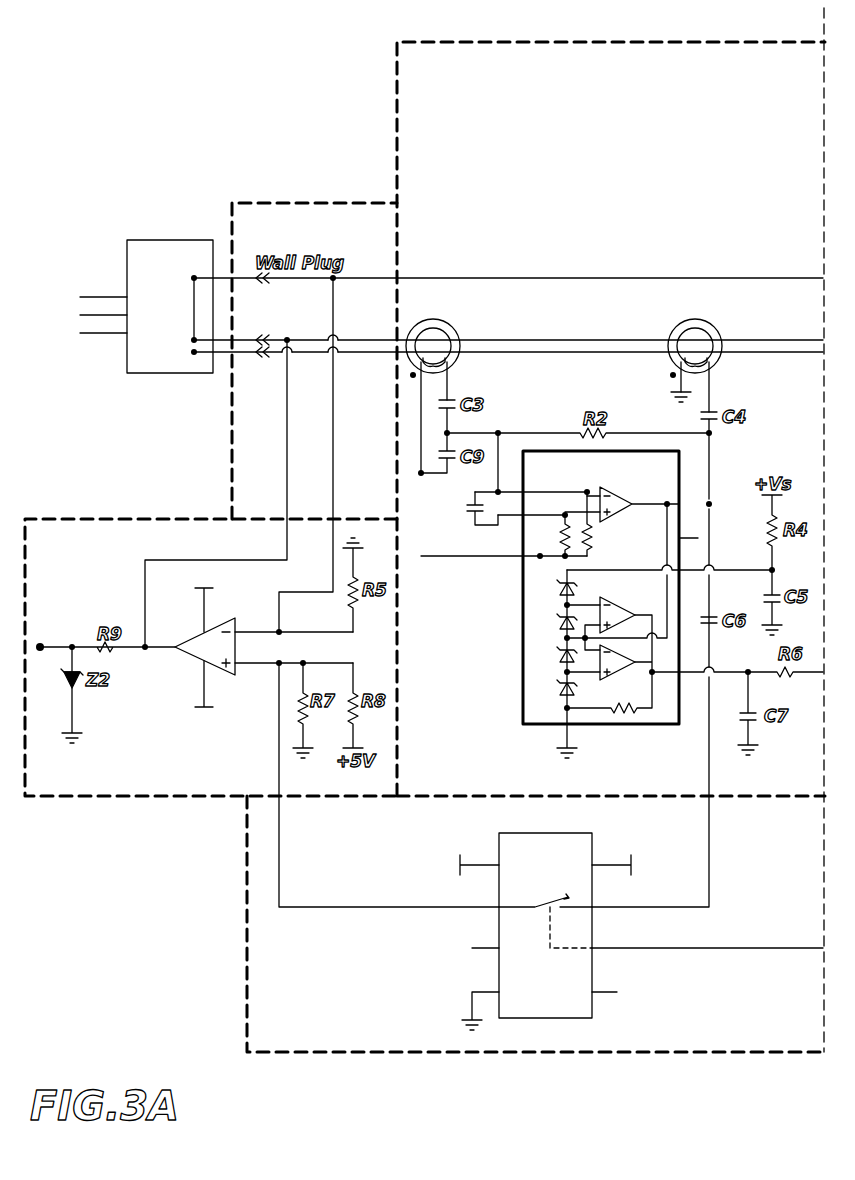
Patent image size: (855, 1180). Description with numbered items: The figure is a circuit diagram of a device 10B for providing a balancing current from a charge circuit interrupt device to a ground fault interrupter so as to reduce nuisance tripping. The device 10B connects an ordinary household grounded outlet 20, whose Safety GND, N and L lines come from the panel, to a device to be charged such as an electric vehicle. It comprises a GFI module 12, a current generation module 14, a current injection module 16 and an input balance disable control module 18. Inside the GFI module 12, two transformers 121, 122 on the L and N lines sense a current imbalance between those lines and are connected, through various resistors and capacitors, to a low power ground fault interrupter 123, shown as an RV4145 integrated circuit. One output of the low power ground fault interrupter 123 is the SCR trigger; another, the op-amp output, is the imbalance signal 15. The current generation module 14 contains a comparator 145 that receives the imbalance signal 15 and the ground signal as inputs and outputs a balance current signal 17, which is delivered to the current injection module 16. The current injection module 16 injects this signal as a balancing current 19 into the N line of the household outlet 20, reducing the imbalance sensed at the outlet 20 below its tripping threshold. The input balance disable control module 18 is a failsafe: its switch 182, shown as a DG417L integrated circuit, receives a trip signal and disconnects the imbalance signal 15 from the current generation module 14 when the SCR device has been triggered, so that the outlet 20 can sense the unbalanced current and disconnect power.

The device 10B is at (91, 1002).
The GFI module 12 is at (512, 42).
The current generation module 14 is at (55, 519).
The imbalance signal 15 is at (709, 835).
The current injection module 16 is at (260, 203).
The balance current signal 17 is at (287, 549).
The input balance disable control module 18 is at (247, 1030).
The balancing current 19 is at (287, 446).
The household grounded outlet 20 is at (149, 240).
The transformer 121 is at (437, 320).
The transformer 122 is at (699, 320).
The low power ground fault interrupter 123 is at (643, 724).
The comparator 145 is at (197, 660).
The switch 182 is at (592, 1010).